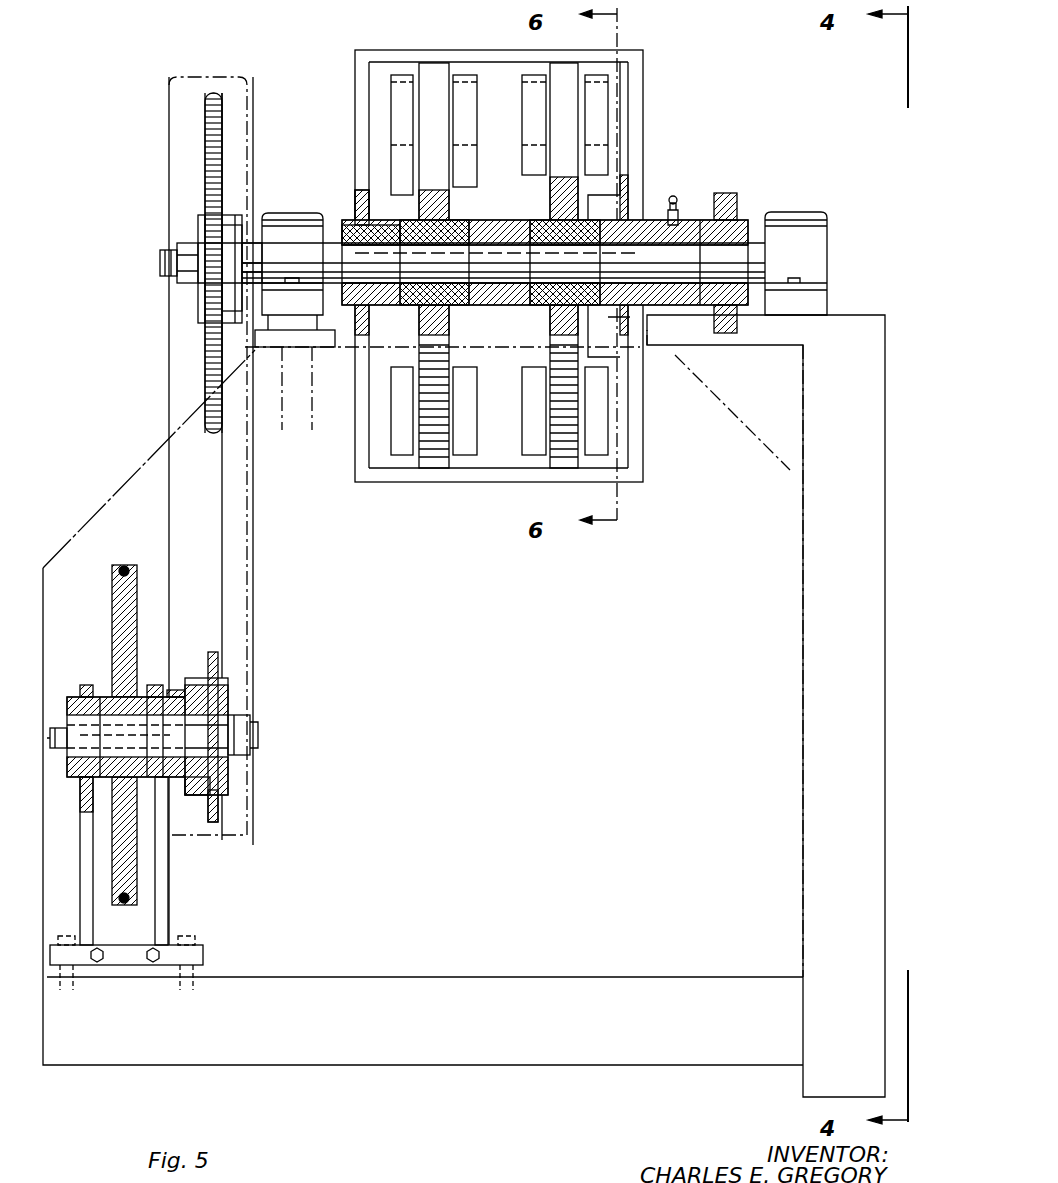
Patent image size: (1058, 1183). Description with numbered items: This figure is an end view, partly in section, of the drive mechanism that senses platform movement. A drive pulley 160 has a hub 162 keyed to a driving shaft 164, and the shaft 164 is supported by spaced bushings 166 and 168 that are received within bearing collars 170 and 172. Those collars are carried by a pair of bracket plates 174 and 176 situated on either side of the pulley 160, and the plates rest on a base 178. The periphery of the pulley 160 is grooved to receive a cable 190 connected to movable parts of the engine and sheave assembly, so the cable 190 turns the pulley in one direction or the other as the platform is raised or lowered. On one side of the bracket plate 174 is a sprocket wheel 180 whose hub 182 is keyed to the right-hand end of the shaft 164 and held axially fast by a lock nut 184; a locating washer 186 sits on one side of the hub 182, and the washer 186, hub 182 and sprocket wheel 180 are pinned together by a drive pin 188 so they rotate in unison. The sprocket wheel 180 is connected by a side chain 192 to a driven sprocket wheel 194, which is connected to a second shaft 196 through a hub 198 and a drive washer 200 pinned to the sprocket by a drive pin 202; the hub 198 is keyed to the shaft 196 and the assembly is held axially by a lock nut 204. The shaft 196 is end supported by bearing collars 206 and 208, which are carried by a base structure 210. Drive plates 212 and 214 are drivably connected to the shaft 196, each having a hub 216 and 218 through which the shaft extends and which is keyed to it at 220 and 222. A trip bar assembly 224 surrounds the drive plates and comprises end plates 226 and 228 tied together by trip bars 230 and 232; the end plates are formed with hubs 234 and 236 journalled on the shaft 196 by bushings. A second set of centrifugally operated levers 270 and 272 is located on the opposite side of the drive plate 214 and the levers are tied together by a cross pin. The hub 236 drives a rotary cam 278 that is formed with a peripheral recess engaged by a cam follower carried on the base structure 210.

The drive pulley 160 is at (140, 880).
The hub 162 is at (120, 790).
The driving shaft 164 is at (127, 737).
The bushing 166 is at (178, 692).
The bushing 168 is at (80, 780).
The bearing collar 170 is at (155, 688).
The bearing collar 172 is at (95, 690).
The bracket plate 174 is at (168, 870).
The bracket plate 176 is at (82, 905).
The base 178 is at (108, 968).
The sprocket wheel 180 is at (220, 806).
The hub 182 is at (195, 797).
The lock nut 184 is at (235, 735).
The locating washer 186 is at (230, 710).
The drive pin 188 is at (222, 685).
The cable 190 is at (124, 905).
The side chain 192 is at (215, 508).
The driven sprocket wheel 194 is at (225, 145).
The shaft 196 is at (252, 243).
The hub 198 is at (230, 215).
The drive washer 200 is at (200, 245).
The drive pin 202 is at (183, 255).
The lock nut 204 is at (182, 283).
The bearing collar 206 is at (298, 222).
The bearing collar 208 is at (793, 238).
The base structure 210 is at (340, 404).
The drive plate 212 is at (452, 203).
The drive plate 214 is at (553, 205).
The hub 216 is at (445, 240).
The hub 218 is at (560, 240).
The key 220 is at (420, 245).
The key 222 is at (588, 235).
The trip bar assembly 224 is at (500, 279).
The end plate 226 is at (362, 160).
The end plate 228 is at (636, 145).
The trip bar 230 is at (465, 50).
The trip bar 232 is at (468, 484).
The hub 234 is at (380, 232).
The hub 236 is at (670, 212).
The centrifugally operated lever 270 is at (532, 422).
The centrifugally operated lever 272 is at (530, 165).
The rotary cam 278 is at (727, 335).